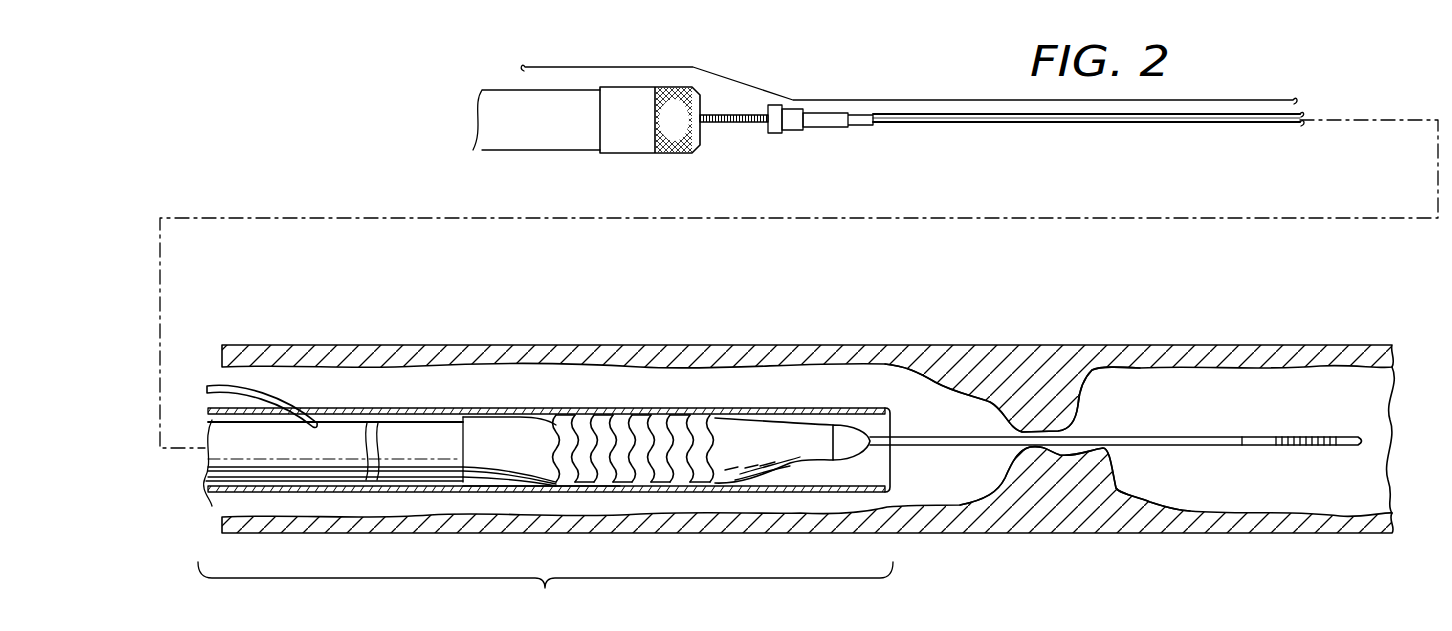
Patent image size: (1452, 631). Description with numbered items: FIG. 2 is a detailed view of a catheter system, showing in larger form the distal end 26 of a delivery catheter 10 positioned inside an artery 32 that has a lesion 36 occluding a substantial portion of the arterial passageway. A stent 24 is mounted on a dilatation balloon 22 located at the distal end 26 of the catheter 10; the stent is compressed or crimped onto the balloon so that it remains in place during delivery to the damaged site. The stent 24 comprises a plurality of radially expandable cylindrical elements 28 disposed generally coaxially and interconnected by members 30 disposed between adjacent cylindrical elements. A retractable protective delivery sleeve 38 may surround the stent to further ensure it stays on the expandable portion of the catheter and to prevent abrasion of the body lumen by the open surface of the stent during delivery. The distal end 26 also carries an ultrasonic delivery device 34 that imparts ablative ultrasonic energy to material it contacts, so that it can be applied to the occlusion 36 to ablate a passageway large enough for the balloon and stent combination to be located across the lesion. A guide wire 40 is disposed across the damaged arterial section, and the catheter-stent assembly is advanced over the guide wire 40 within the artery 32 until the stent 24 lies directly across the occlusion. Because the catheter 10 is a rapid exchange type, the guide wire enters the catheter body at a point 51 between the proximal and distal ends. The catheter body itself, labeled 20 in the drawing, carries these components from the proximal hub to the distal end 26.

The delivery catheter 10 is at (990, 126).
The outer catheter sheath 20 is at (1126, 121).
The dilatation balloon 22 is at (482, 450).
The stent 24 is at (548, 458).
The distal end 26 is at (545, 591).
The cylindrical elements 28 is at (677, 420).
The interconnecting members 30 is at (598, 415).
The artery 32 is at (1288, 356).
The ultrasonic delivery device 34 is at (857, 423).
The lesion 36 is at (990, 409).
The retractable protective delivery sleeve 38 is at (530, 491).
The guide wire 40 is at (1158, 437).
The guide wire entry point 51 is at (316, 422).